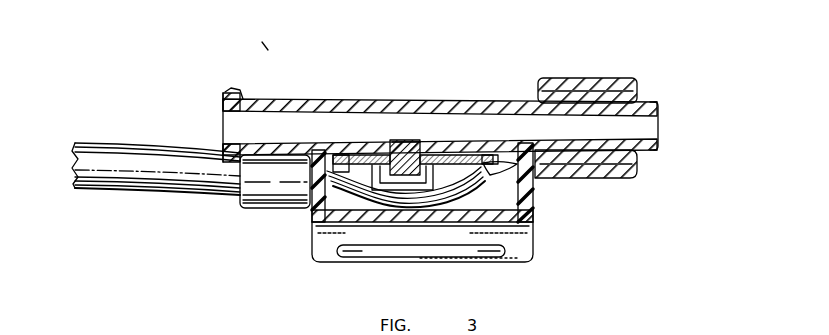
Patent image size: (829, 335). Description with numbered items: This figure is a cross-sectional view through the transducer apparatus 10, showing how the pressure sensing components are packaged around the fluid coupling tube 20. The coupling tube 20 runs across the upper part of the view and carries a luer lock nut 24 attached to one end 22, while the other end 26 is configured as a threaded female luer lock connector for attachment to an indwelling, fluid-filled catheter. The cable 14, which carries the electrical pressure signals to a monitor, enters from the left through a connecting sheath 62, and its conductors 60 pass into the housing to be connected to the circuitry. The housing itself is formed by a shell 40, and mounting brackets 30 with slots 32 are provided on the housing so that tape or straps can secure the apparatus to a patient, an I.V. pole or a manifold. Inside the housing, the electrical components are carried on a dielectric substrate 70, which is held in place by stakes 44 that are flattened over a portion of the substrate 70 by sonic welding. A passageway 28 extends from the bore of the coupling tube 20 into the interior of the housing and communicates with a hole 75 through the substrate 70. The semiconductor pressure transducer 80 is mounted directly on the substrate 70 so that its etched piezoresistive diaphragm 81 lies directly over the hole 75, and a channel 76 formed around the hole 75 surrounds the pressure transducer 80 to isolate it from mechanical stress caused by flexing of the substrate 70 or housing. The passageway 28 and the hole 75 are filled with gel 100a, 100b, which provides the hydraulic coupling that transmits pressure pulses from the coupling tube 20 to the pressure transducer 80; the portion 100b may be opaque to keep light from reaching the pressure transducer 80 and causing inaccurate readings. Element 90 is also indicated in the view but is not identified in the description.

The transducer apparatus 10 is at (258, 36).
The cable 14 is at (147, 170).
The coupling tube 20 is at (442, 106).
The one end 22 is at (655, 108).
The luer lock nut 24 is at (577, 80).
The other end 26 is at (228, 96).
The passageway 28 is at (390, 141).
The mounting brackets 30 is at (330, 237).
The slots 32 is at (380, 250).
The shell 40 is at (535, 202).
The stakes 44 is at (537, 189).
The conductors 60 is at (515, 257).
The connecting sheath 62 is at (263, 183).
The substrate 70 is at (535, 220).
The hole 75 is at (344, 167).
The channel 76 is at (432, 146).
The pressure transducer 80 is at (392, 175).
The piezoresistive diaphragm 81 is at (407, 180).
The wire 90 is at (487, 172).
The gel 100a is at (410, 141).
The portion of gel 100b is at (404, 140).